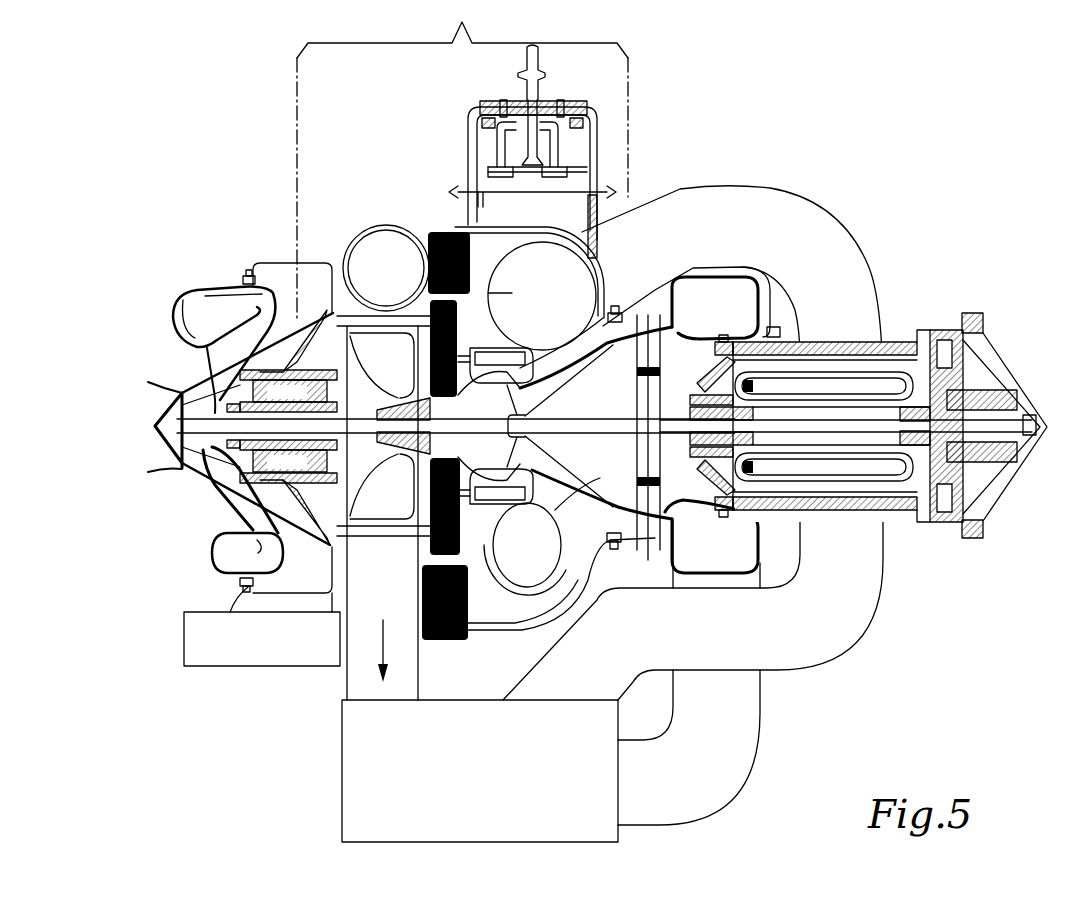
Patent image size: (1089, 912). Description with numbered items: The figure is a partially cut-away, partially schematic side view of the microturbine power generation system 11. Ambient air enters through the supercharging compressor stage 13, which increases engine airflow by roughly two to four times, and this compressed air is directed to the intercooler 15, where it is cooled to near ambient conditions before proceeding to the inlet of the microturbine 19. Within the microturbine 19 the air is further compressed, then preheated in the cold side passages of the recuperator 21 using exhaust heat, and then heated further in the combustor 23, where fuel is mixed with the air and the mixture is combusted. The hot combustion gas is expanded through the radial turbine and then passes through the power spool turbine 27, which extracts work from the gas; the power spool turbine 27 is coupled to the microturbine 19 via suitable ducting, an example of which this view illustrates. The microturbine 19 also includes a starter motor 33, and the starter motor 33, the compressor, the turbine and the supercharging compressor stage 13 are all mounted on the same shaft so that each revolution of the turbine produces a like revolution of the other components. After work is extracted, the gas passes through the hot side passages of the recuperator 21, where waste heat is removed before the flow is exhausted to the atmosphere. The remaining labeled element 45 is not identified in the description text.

The microturbine power generation system 11 is at (903, 173).
The supercharging compressor stage 13 is at (178, 410).
The intercooler 15 is at (191, 647).
The microturbine 19 is at (445, 24).
The recuperator 21 is at (358, 722).
The combustor 23 is at (583, 157).
The power spool turbine 27 is at (733, 540).
The starter motor 33 is at (245, 468).
The electric motor 45 is at (903, 336).